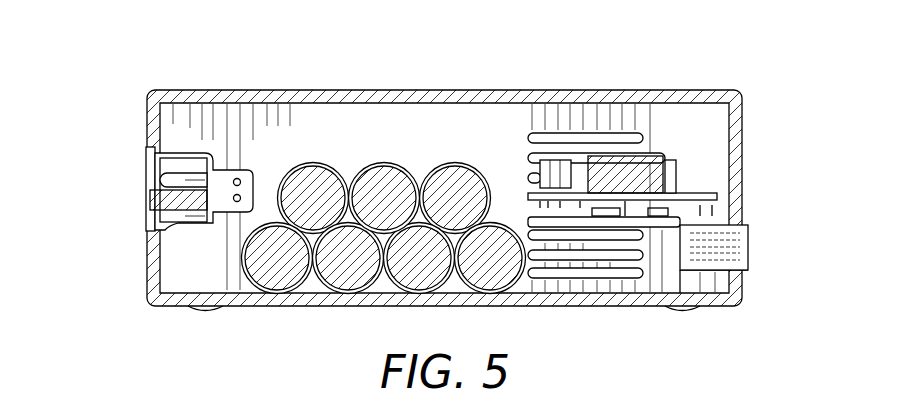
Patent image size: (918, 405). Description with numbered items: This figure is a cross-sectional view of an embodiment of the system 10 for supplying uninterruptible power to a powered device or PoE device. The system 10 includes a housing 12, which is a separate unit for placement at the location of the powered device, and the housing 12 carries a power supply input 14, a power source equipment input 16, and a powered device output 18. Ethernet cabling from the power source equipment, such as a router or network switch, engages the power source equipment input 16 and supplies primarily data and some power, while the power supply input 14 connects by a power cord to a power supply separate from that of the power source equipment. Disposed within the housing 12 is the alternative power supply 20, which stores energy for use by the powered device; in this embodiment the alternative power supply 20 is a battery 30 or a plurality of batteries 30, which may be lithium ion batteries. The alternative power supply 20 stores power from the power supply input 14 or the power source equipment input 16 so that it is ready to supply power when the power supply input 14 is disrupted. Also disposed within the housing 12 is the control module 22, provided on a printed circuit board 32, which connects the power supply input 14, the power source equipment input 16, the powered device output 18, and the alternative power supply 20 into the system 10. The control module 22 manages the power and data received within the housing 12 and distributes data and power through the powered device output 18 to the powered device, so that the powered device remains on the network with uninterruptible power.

The system for supplying uninterruptible power 10 is at (439, 197).
The housing 12 is at (715, 302).
The power supply input 14 is at (150, 208).
The power source equipment input 16 is at (748, 228).
The powered device output 18 is at (745, 270).
The alternative power supply 20 is at (406, 173).
The control module 22 is at (715, 193).
The battery 30 is at (387, 168).
The printed circuit board 32 is at (680, 192).